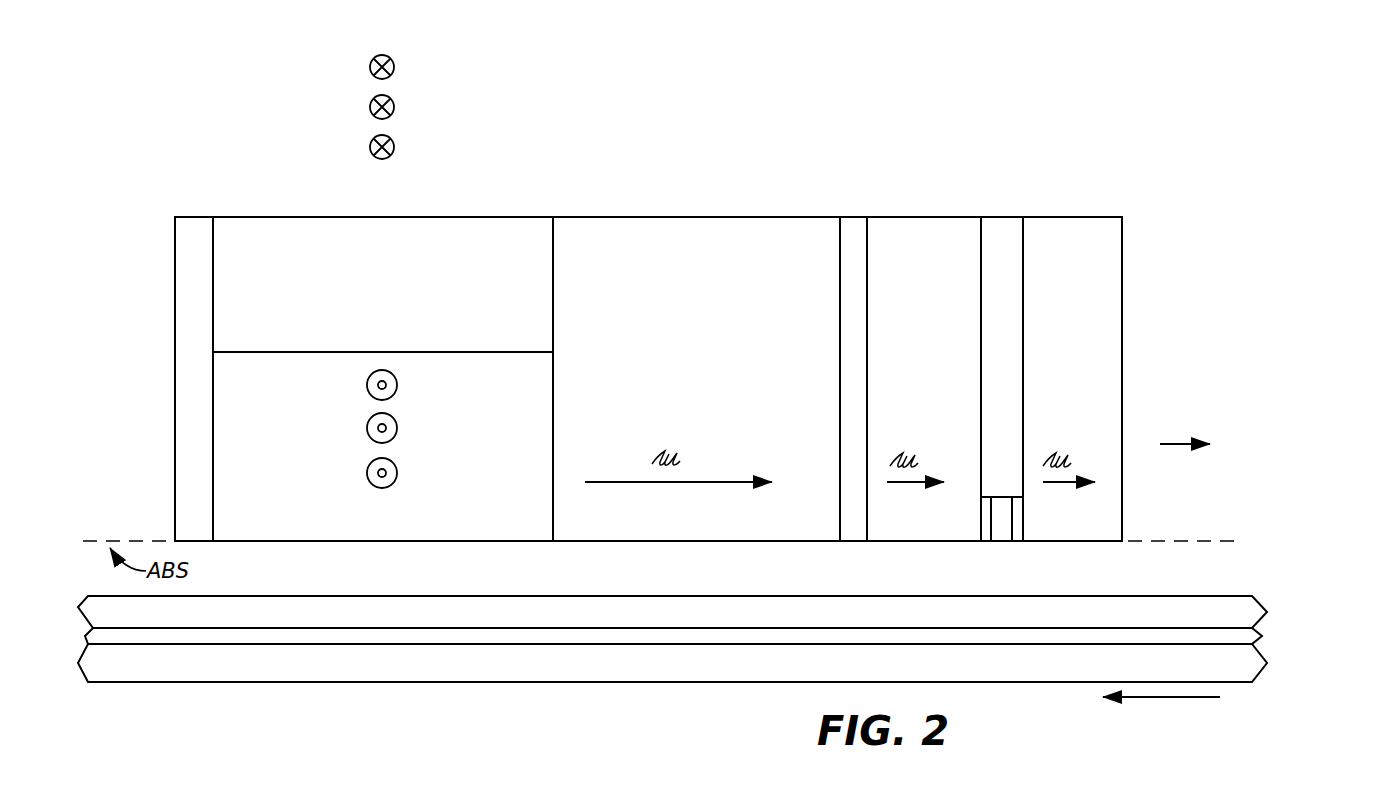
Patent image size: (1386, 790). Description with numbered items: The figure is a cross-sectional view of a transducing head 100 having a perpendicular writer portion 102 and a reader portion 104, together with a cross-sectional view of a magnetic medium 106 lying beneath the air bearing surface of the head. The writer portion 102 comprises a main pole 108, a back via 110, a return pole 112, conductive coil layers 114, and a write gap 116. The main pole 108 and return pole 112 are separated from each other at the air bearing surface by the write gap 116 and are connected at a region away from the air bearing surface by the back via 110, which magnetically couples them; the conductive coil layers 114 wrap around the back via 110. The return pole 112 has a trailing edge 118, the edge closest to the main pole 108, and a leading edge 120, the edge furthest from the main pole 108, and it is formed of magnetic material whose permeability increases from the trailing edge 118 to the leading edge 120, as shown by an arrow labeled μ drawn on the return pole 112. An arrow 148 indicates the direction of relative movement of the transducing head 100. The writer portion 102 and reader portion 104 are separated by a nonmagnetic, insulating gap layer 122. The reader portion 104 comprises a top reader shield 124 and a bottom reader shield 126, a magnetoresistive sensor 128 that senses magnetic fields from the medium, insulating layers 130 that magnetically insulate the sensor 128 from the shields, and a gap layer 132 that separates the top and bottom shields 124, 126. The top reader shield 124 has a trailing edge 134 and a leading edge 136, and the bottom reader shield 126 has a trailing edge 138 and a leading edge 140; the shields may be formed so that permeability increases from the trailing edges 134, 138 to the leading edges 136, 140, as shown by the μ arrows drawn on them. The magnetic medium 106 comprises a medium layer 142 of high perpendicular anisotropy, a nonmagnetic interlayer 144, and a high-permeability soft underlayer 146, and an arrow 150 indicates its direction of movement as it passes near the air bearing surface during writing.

The transducing head 100 is at (1096, 136).
The perpendicular writer portion 102 is at (684, 177).
The reader portion 104 is at (992, 159).
The magnetic medium 106 is at (731, 664).
The main pole 108 is at (175, 481).
The back via 110 is at (445, 230).
The return pole 112 is at (745, 237).
The conductive coil layers 114 is at (411, 80).
The write gap 116 is at (275, 511).
The trailing edge of return pole 118 is at (553, 495).
The leading edge of return pole 120 is at (838, 523).
The gap layer 122 is at (853, 217).
The top reader shield 124 is at (943, 328).
The bottom reader shield 126 is at (1097, 328).
The magnetoresistive sensor 128 is at (1003, 542).
The insulating layers 130 is at (988, 542).
The gap layer 132 is at (997, 217).
The trailing edge of top reader shield 134 is at (867, 527).
The leading edge of top reader shield 136 is at (980, 522).
The trailing edge of bottom reader shield 138 is at (1025, 242).
The leading edge of bottom reader shield 140 is at (1122, 260).
The medium layer 142 is at (1253, 606).
The interlayer 144 is at (1262, 637).
The soft underlayer 146 is at (1263, 662).
The arrow 148 is at (1216, 445).
The arrow 150 is at (1161, 712).